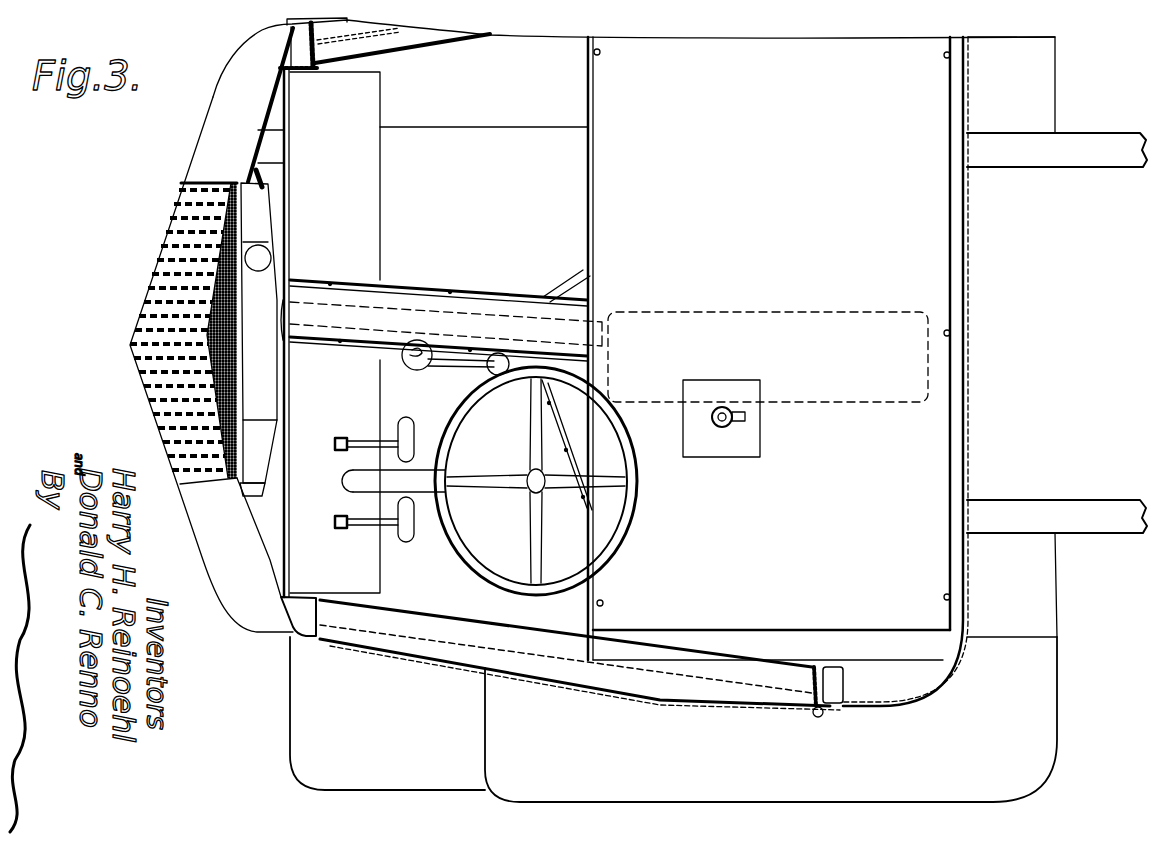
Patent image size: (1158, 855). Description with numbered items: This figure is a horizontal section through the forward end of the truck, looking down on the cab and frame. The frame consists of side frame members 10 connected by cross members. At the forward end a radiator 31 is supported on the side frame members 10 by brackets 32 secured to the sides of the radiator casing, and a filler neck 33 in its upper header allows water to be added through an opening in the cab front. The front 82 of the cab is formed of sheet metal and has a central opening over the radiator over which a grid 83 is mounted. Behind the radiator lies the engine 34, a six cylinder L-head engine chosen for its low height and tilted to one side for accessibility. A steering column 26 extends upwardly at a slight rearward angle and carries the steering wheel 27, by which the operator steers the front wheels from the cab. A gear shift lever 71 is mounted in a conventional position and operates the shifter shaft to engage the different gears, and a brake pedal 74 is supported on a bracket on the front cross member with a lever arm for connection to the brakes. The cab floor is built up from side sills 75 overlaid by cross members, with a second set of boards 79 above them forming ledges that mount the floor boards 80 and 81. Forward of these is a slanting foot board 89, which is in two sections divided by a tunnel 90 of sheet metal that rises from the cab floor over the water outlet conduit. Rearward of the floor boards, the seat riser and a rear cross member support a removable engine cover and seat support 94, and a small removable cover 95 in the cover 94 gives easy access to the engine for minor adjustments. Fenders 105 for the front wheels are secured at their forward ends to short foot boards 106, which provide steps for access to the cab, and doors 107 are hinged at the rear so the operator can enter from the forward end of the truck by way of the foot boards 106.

The side frame members 10 is at (1093, 157).
The steering column 26 is at (422, 472).
The steering wheel 27 is at (620, 530).
The radiator 31 is at (265, 212).
The brackets 32 is at (260, 178).
The filler neck 33 is at (262, 256).
The engine 34 is at (853, 380).
The gear shift lever 71 is at (430, 366).
The brake pedal 74 is at (357, 439).
The side sills 75 is at (357, 517).
The second set of boards 79 is at (512, 348).
The floor board 80 is at (395, 405).
The floor board 81 is at (397, 155).
The front of the cab 82 is at (220, 122).
The grid 83 is at (170, 231).
The slanting foot board 89 is at (367, 205).
The tunnel 90 is at (423, 294).
The engine cover and seat support 94 is at (827, 238).
The small removable cover 95 is at (723, 430).
The fenders 105 is at (498, 748).
The short foot boards 106 is at (303, 678).
The doors 107 is at (607, 693).